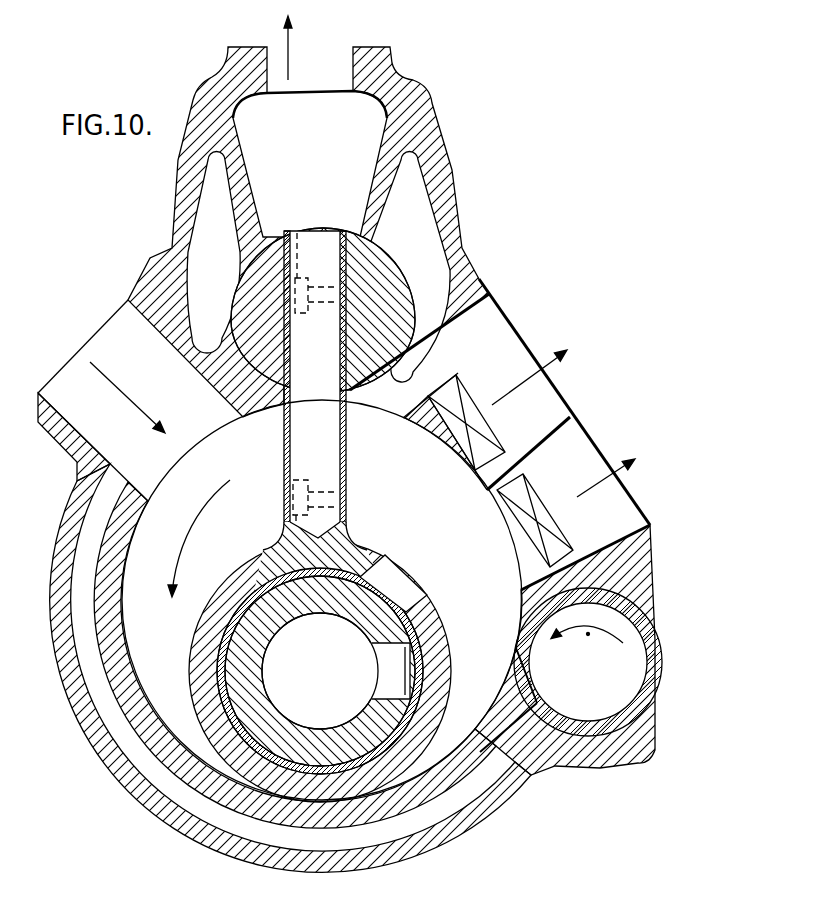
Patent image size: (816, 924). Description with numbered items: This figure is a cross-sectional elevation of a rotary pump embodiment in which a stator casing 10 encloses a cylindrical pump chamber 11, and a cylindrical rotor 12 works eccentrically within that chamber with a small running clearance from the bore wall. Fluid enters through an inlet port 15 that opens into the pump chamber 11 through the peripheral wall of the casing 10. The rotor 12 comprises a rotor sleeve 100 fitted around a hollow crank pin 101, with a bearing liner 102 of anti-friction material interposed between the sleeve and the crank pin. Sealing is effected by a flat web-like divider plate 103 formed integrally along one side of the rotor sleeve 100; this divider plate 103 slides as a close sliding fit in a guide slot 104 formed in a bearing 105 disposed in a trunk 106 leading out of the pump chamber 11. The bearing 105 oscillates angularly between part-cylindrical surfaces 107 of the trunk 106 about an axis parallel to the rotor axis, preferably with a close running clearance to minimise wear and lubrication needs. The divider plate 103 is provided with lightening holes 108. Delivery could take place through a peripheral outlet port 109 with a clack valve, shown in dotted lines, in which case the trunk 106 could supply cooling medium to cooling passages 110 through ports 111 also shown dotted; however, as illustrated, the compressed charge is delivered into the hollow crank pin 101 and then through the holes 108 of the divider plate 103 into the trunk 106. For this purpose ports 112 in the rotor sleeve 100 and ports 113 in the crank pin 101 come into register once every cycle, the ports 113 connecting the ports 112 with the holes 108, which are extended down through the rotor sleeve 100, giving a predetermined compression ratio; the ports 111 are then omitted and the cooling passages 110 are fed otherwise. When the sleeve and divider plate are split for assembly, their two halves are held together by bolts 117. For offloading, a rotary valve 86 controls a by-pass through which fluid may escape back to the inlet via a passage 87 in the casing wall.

The stator casing 10 is at (110, 744).
The pump chamber 11 is at (453, 730).
The rotor 12 is at (440, 623).
The inlet port 15 is at (135, 330).
The rotary valve 86 is at (597, 731).
The passage 87 is at (217, 813).
The rotor sleeve 100 is at (220, 632).
The crank pin 101 is at (312, 590).
The bearing liner 102 is at (403, 777).
The divider plate 103 is at (344, 431).
The guide slot 104 is at (298, 367).
The bearing 105 is at (340, 317).
The trunk 106 is at (355, 168).
The part-cylindrical surfaces 107 is at (340, 317).
The lightening holes 108 is at (313, 460).
The outlet port 109 is at (552, 460).
The cooling passages 110 is at (205, 244).
The ports 111 is at (247, 182).
The ports 112 is at (390, 577).
The ports 113 is at (395, 663).
The bolts 117 is at (297, 242).